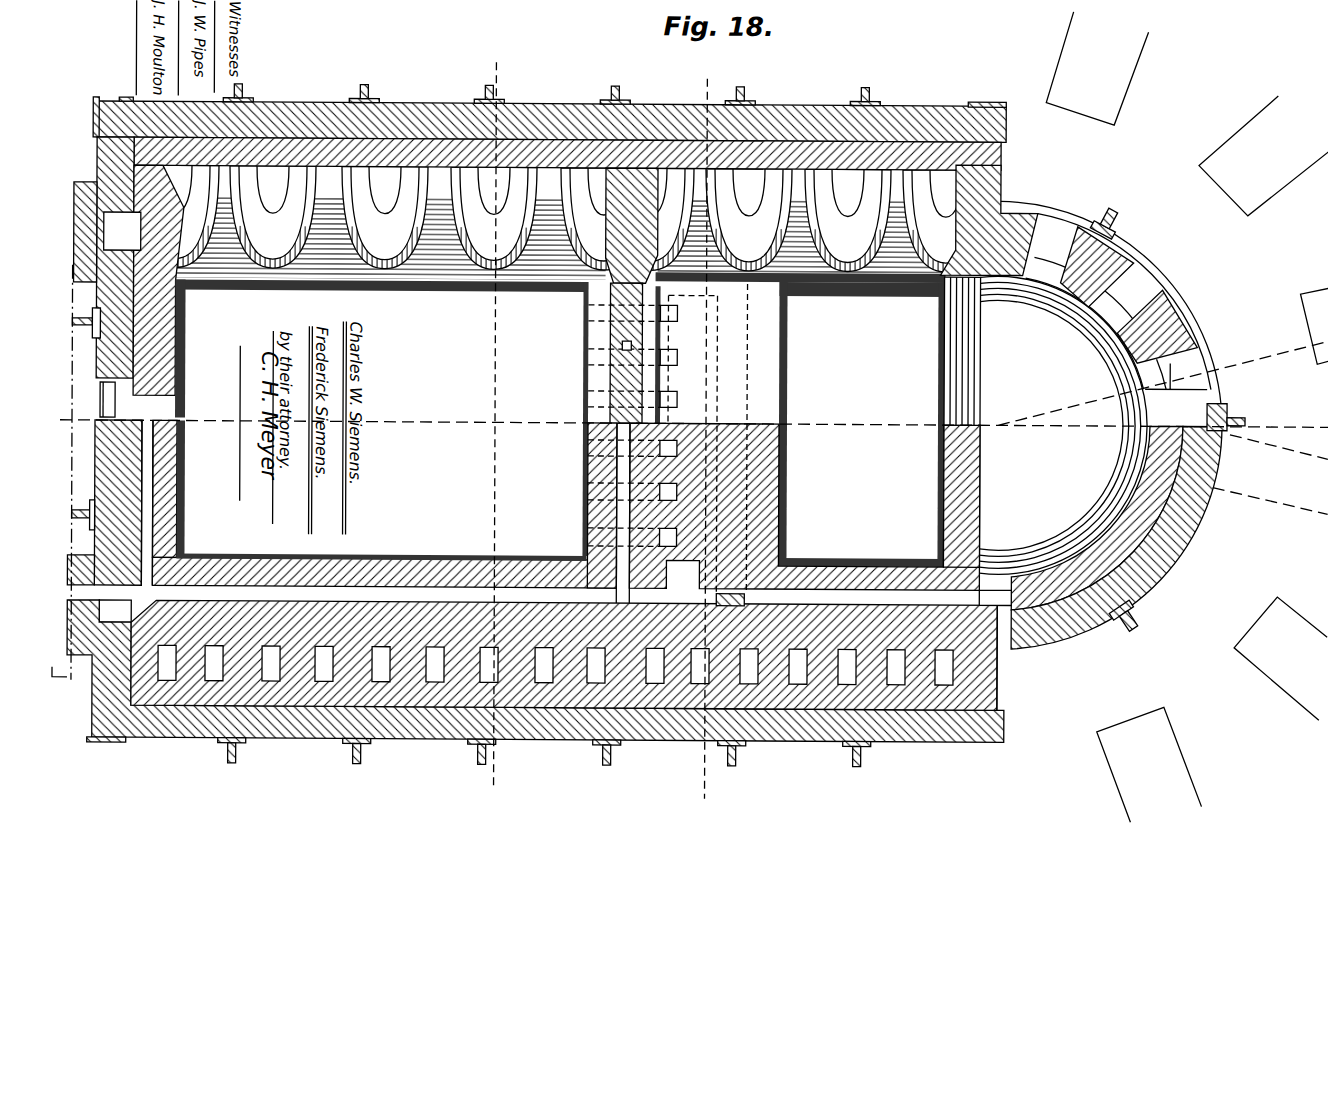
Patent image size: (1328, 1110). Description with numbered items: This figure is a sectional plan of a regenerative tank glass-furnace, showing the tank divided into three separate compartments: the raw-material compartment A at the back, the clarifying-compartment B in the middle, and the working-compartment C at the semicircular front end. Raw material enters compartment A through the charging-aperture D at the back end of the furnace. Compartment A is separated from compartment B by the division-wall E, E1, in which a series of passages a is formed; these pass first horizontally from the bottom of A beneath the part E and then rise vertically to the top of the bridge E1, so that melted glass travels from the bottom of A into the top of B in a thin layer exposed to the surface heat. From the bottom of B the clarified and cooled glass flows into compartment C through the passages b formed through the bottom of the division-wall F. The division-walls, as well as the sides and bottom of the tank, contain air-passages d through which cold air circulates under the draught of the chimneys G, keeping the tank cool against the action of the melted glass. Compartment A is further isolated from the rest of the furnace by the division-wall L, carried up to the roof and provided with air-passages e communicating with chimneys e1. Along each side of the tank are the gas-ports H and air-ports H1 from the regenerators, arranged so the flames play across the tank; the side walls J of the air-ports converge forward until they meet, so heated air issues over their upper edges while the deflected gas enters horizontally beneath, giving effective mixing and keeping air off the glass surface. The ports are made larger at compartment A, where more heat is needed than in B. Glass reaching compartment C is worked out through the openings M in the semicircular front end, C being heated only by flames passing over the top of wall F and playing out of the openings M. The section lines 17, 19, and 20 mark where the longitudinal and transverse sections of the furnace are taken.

The raw-material compartment A is at (381, 419).
The clarifying-compartment B is at (800, 419).
The working-compartment C is at (1063, 425).
The charging-aperture D is at (133, 400).
The division-wall (lower part) E is at (624, 425).
The division-wall (bridge part) E1 is at (783, 506).
The division-wall F is at (967, 351).
The chimney G is at (117, 417).
The gas-port H is at (561, 218).
The air-port H1 is at (555, 657).
The side wall of air-port J is at (798, 220).
The division-wall L is at (631, 295).
The working-opening M is at (1135, 329).
The passage a is at (630, 425).
The passage b is at (952, 483).
The air-passage d is at (385, 512).
The air-passage e is at (626, 338).
The chimney e1 is at (1006, 657).
The section line 17 17 is at (82, 472).
The section line 19 19 is at (499, 418).
The section line 20 20 is at (710, 431).